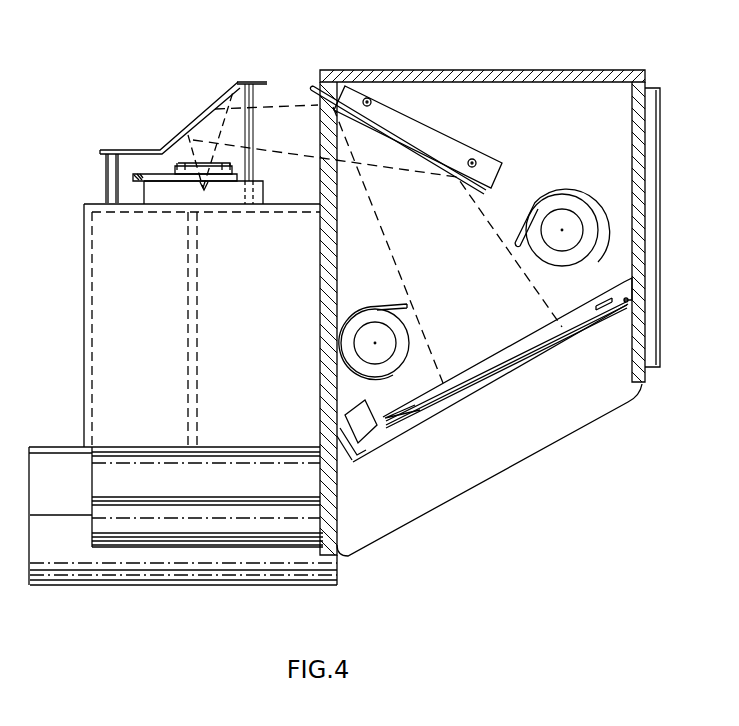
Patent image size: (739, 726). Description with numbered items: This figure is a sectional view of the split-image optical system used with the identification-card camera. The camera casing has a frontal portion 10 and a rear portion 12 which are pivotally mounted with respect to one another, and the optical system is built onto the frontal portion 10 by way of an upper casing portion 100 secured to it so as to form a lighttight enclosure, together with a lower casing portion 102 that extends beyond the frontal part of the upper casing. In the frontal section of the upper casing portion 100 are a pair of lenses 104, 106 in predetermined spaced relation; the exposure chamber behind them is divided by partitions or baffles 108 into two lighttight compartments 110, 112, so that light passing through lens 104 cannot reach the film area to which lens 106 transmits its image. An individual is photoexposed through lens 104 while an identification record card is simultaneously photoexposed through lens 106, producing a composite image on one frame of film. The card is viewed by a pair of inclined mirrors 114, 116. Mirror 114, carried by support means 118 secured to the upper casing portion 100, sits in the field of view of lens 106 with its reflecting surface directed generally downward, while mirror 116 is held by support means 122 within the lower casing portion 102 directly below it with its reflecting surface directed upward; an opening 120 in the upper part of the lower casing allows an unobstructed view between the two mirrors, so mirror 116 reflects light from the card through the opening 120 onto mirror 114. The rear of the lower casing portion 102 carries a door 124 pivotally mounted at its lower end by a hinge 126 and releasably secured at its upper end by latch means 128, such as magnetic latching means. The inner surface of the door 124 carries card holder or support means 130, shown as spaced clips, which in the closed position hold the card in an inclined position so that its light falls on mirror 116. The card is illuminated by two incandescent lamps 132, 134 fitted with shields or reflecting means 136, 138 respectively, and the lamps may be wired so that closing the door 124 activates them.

The frontal portion 10 is at (174, 516).
The rear portion 12 is at (183, 532).
The upper casing portion 100 is at (84, 256).
The lower casing portion 102 is at (509, 69).
The lens 104 is at (152, 175).
The lens 106 is at (185, 170).
The partitions or baffles 108 is at (203, 224).
The compartment 110 is at (128, 207).
The compartment 112 is at (268, 325).
The inclined mirror 114 is at (201, 114).
The inclined mirror 116 is at (418, 161).
The support means 118 is at (128, 148).
The opening 120 is at (328, 150).
The support means 122 is at (455, 142).
The door 124 is at (476, 394).
The hinge 126 is at (630, 304).
The latch means 128 is at (363, 432).
The identification card holder or support means 130 is at (497, 360).
The lamp 132 is at (403, 337).
The lamp 134 is at (570, 259).
The shield or reflecting means 136 is at (398, 302).
The shield or reflecting means 138 is at (518, 230).